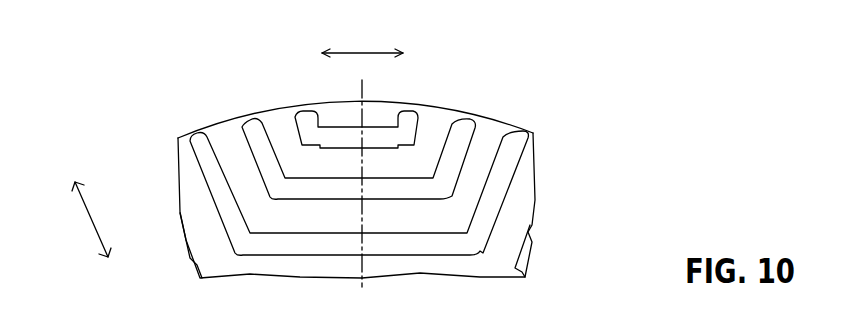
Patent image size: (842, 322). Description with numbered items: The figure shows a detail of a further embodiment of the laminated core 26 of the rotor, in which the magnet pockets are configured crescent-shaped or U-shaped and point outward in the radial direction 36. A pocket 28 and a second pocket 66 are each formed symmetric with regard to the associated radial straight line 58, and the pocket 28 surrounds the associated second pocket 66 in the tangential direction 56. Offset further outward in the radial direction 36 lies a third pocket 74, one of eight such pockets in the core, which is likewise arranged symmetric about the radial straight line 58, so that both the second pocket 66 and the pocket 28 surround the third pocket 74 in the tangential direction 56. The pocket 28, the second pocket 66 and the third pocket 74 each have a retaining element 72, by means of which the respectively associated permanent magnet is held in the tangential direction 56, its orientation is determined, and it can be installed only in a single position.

The laminated core 26 is at (178, 137).
The pocket 28 is at (487, 208).
The radial direction 36 is at (92, 220).
The tangential direction 56 is at (363, 51).
The radial straight line 58 is at (363, 91).
The second pocket 66 is at (458, 148).
The retaining element 72 is at (276, 190).
The third pocket 74 is at (338, 138).